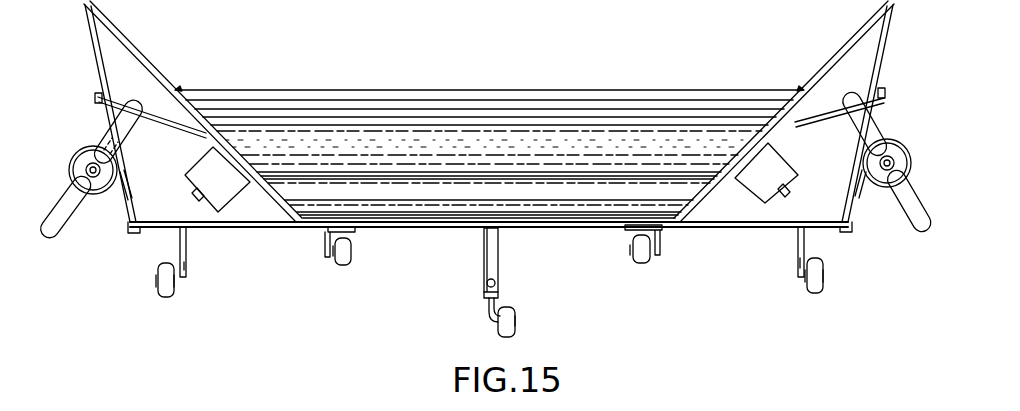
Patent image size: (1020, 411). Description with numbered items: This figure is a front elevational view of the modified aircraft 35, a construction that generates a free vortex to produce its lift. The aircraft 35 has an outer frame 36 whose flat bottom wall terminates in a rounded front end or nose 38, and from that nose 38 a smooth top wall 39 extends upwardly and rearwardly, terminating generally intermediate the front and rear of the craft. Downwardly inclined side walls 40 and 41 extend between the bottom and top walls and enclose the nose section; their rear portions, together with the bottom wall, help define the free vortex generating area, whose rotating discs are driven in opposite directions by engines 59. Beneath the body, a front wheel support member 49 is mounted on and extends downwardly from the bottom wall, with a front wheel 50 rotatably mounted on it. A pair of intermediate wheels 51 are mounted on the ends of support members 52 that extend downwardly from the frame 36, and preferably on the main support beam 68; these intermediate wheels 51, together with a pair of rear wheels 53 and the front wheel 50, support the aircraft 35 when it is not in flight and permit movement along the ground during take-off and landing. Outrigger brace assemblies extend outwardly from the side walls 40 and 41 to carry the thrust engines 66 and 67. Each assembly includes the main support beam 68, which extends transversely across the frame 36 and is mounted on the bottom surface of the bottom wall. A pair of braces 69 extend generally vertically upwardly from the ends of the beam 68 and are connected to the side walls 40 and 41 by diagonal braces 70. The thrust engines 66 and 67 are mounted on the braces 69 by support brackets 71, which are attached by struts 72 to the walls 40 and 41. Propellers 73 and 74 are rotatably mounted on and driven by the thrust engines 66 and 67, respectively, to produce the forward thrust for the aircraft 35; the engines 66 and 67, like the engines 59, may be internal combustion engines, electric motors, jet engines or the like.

The aircraft 35 is at (642, 75).
The outer frame 36 is at (256, 186).
The rounded front end or nose 38 is at (446, 202).
The smooth top wall 39 is at (418, 130).
The side wall 40 is at (271, 197).
The side wall 41 is at (712, 190).
The front wheel support member 49 is at (500, 266).
The front wheel 50 is at (516, 312).
The intermediate wheels 51 is at (166, 293).
The support members 52 is at (186, 262).
The rear wheels 53 is at (343, 264).
The engines 59 is at (208, 172).
The thrust engine 66 is at (78, 156).
The thrust engine 67 is at (894, 150).
The main support beam 68 is at (288, 230).
The braces 69 is at (96, 57).
The diagonal braces 70 is at (118, 38).
The support brackets 71 is at (120, 210).
The struts 72 is at (162, 121).
The propeller 73 is at (48, 238).
The propeller 74 is at (918, 238).